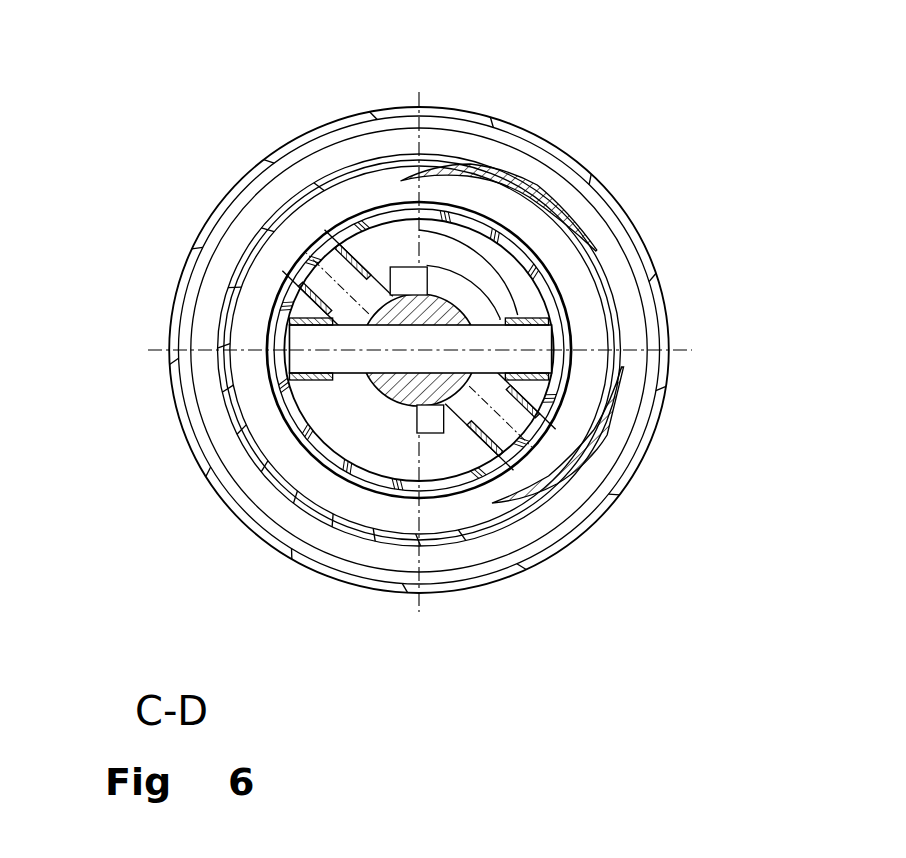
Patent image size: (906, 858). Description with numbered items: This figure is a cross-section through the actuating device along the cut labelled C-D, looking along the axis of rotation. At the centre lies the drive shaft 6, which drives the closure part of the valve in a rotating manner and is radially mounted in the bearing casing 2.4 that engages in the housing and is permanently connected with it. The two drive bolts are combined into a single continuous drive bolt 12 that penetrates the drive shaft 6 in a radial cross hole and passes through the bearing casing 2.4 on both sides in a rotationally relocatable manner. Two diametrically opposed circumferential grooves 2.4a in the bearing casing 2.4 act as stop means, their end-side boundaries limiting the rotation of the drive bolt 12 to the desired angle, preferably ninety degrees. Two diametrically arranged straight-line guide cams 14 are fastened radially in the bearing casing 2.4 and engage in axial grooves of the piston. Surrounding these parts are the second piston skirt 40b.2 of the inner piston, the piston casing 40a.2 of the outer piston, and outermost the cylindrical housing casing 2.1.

The cylindrical housing casing 2.1 is at (190, 262).
The bearing casing 2.4 is at (372, 290).
The circumferential groove 2.4a is at (458, 290).
The drive shaft 6 is at (396, 388).
The drive bolt 12 is at (512, 263).
The straight-line guide cam 14 is at (421, 267).
The piston casing 40a.2 is at (292, 410).
The second piston skirt 40b.2 is at (338, 414).